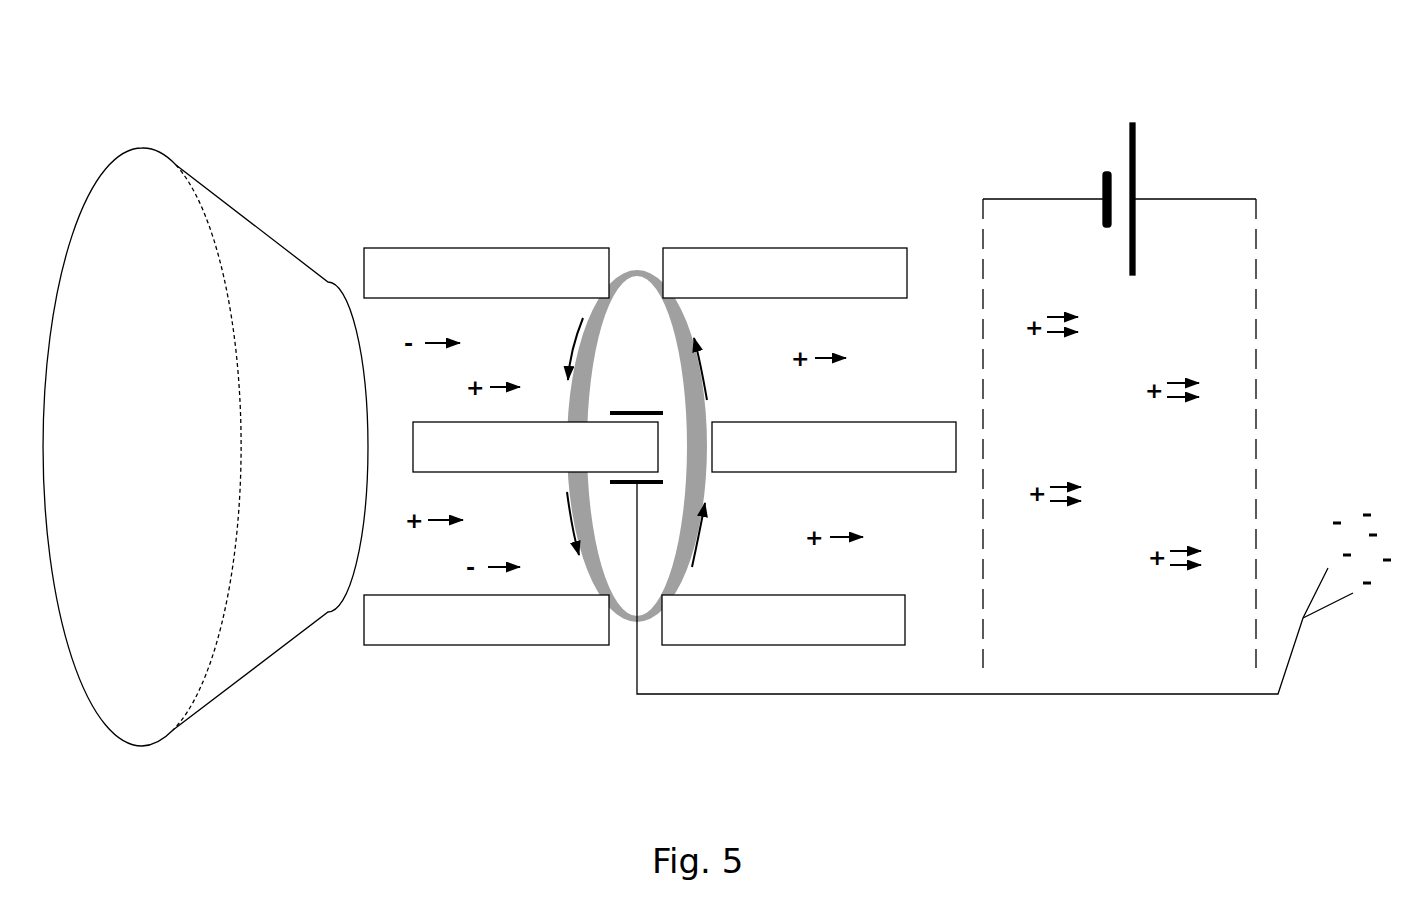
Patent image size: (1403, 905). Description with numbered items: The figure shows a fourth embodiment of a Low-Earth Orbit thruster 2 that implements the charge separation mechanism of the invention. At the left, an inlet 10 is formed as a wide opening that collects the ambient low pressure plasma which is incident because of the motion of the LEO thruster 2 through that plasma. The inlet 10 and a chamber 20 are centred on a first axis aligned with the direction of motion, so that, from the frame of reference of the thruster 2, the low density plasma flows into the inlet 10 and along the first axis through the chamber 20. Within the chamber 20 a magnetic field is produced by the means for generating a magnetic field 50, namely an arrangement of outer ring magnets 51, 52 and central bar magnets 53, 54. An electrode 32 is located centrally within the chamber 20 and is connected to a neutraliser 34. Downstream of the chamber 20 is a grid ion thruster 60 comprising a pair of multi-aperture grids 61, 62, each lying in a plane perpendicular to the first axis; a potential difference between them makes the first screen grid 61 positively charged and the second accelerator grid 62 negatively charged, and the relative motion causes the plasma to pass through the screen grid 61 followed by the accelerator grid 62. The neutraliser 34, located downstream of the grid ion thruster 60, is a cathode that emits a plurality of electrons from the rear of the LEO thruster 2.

The LEO thruster 2 is at (360, 95).
The inlet 10 is at (125, 676).
The chamber 20 is at (760, 555).
The electrode 32 is at (630, 486).
The neutraliser 34 is at (1327, 610).
The means for generating a magnetic field 50 is at (660, 353).
The outer ring magnet 51 is at (585, 249).
The outer ring magnet 52 is at (810, 429).
The central bar magnet 53 is at (555, 422).
The central bar magnet 54 is at (661, 249).
The grid ion thruster 60 is at (1190, 175).
The screen grid 61 is at (982, 265).
The accelerator grid 62 is at (1257, 270).